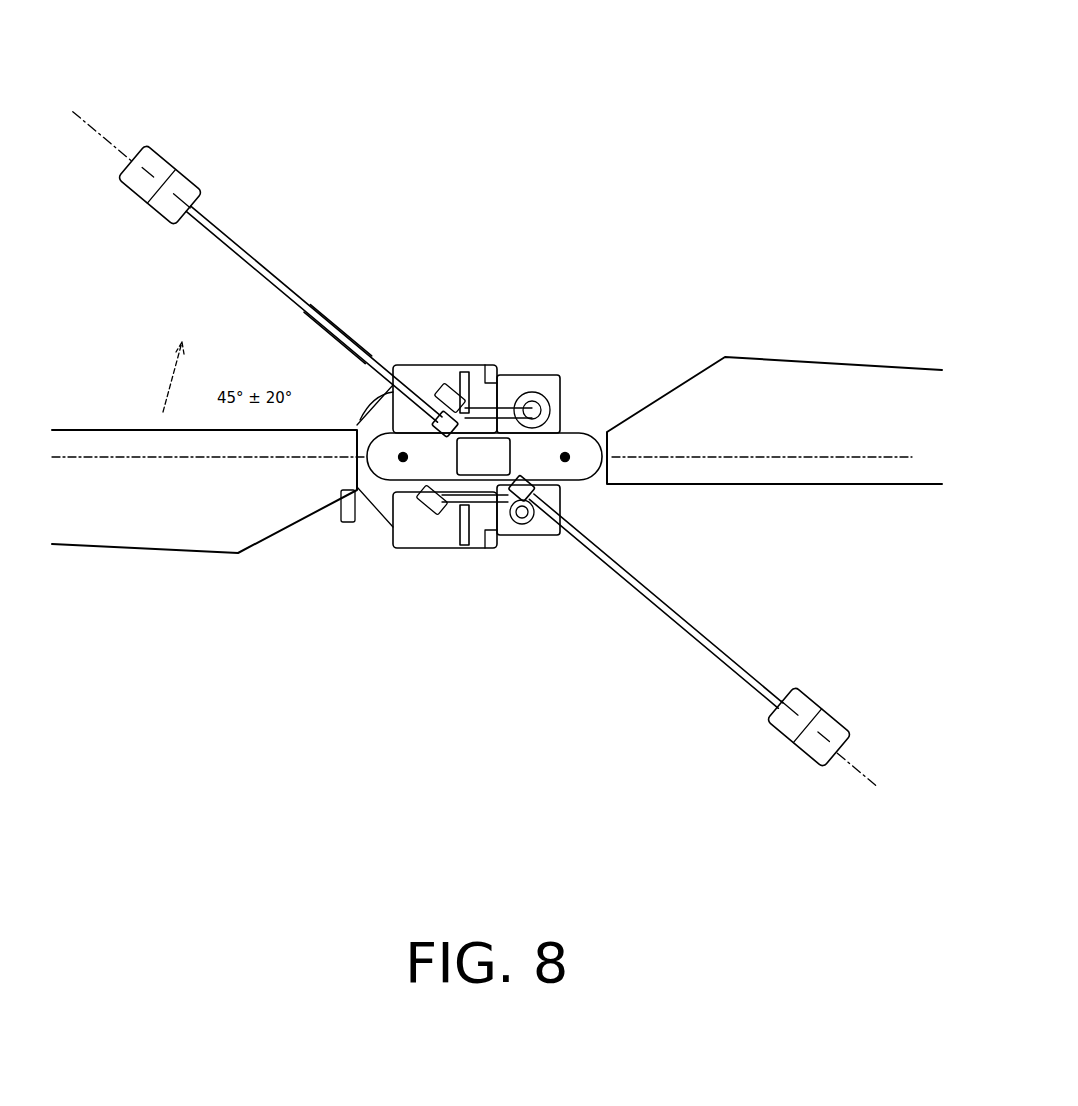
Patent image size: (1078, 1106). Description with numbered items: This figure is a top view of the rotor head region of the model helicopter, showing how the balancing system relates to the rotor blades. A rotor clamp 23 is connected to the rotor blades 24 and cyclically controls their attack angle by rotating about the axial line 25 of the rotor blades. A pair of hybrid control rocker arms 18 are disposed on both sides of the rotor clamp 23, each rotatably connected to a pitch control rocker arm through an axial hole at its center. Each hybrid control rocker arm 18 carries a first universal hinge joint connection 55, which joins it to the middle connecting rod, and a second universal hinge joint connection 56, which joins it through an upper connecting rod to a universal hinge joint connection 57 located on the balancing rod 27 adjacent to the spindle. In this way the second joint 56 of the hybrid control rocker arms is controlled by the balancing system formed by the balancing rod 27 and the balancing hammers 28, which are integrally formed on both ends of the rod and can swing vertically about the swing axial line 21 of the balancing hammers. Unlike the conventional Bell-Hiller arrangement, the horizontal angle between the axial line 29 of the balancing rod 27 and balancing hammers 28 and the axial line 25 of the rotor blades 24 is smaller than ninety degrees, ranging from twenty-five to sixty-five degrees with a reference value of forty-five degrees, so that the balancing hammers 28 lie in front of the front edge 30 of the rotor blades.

The hybrid control rocker arm 18 is at (496, 395).
The swing axial line of balancing hammers 21 is at (425, 512).
The rotor clamp 23 is at (583, 447).
The rotor blade 24 is at (247, 535).
The axial line of the rotor blades 25 is at (318, 453).
The balancing rod 27 is at (243, 250).
The balancing hammer 28 is at (165, 172).
The axial line of the balancing hammers 29 is at (97, 130).
The front edge of the rotor blade 30 is at (748, 487).
The first universal hinge joint connection 55 is at (497, 435).
The second universal hinge joint connection 56 is at (455, 375).
The universal hinge joint connection between upper connecting rod and balancing rod 57 is at (464, 398).